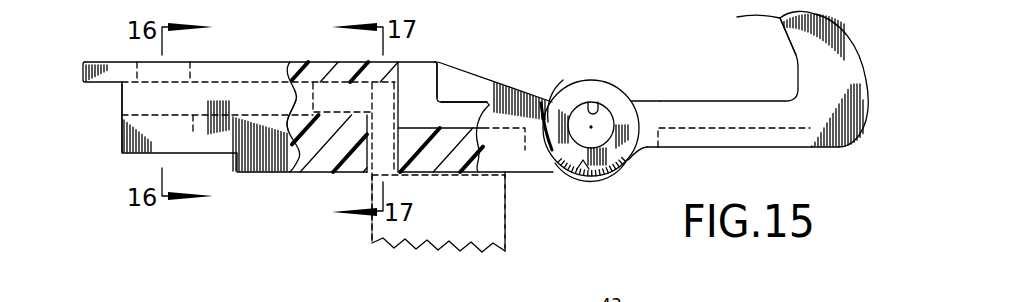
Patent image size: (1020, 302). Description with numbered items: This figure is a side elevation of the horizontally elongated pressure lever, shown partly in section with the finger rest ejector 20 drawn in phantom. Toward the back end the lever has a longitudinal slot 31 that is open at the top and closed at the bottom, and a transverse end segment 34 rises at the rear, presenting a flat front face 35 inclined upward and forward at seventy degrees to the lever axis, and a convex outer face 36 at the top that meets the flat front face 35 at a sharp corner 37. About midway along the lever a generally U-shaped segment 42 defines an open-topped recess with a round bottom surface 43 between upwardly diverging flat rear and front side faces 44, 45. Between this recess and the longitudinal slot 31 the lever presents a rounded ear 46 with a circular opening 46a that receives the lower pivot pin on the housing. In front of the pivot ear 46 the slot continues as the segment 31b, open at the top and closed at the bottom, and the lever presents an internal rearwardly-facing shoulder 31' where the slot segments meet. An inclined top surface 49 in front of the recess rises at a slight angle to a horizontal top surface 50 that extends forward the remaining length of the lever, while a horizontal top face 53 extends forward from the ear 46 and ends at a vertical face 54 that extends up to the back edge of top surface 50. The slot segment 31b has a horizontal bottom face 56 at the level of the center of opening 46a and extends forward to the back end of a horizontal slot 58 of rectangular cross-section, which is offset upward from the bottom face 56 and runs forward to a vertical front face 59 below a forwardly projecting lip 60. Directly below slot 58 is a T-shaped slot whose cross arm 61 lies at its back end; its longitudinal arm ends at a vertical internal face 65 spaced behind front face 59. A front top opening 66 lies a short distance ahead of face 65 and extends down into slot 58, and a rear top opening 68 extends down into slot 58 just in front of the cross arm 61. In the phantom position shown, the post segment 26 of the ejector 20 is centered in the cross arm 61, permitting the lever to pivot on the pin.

The ejector 20 is at (452, 233).
The post segment 26 is at (403, 142).
The longitudinal slot 31 is at (734, 105).
The rearwardly-facing shoulder 31' is at (535, 161).
The longitudinal slot segment 31b is at (457, 110).
The transverse end segment 34 is at (847, 72).
The flat front face 35 is at (789, 43).
The convex outer face 36 is at (830, 21).
The sharp corner 37 is at (747, 18).
The U-shaped segment 42 is at (628, 162).
The round bottom surface 43 is at (585, 165).
The rear side face 44 is at (629, 100).
The front side face 45 is at (565, 83).
The rounded ear 46 is at (585, 88).
The circular opening 46a is at (597, 100).
The inclined top surface 49 is at (480, 76).
The horizontal top surface 50 is at (291, 62).
The horizontal top face 53 is at (483, 100).
The vertical face 54 is at (440, 61).
The horizontal bottom face 56 is at (423, 127).
The horizontal slot 58 is at (288, 93).
The vertical front face 59 is at (122, 108).
The lip 60 is at (92, 61).
The cross arm 61 is at (343, 172).
The vertical internal face 65 is at (193, 131).
The front top opening 66 is at (192, 72).
The rear top opening 68 is at (330, 68).